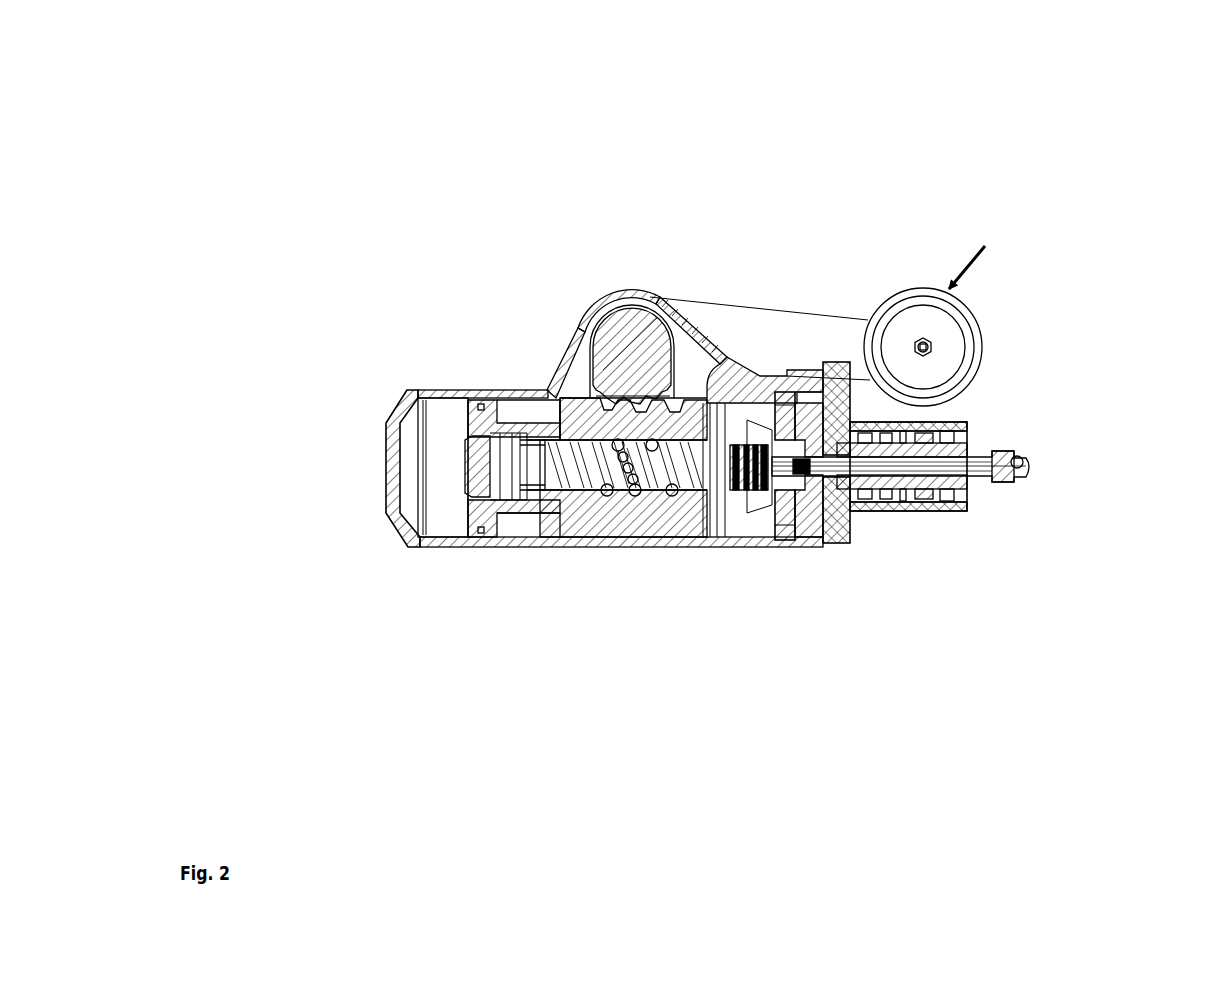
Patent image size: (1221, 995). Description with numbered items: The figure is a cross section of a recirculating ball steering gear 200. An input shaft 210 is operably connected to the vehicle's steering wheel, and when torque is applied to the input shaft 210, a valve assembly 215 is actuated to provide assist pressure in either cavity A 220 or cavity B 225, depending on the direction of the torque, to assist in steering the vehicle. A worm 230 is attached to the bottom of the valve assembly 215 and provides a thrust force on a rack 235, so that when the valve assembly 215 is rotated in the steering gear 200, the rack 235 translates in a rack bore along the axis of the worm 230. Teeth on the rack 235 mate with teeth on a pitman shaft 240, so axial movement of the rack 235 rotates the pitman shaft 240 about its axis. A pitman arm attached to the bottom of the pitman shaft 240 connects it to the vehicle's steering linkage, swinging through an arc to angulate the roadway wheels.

The recirculating ball steering gear 200 is at (462, 104).
The input shaft 210 is at (1019, 448).
The valve assembly 215 is at (901, 492).
The cavity A 220 is at (519, 408).
The cavity B 225 is at (450, 498).
The worm 230 is at (685, 470).
The rack 235 is at (606, 427).
The pitman shaft 240 is at (614, 391).